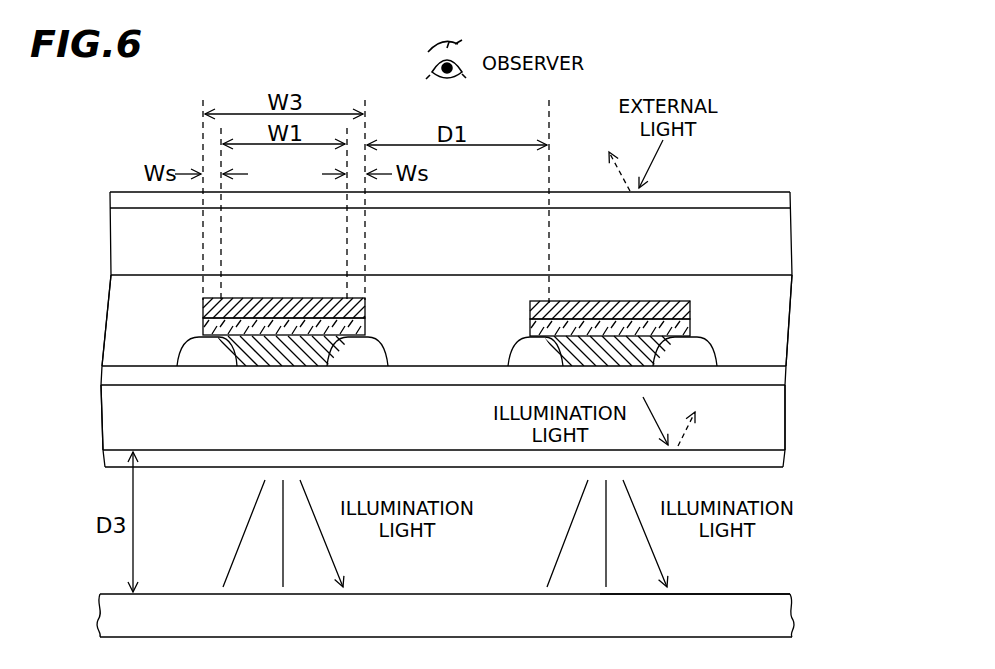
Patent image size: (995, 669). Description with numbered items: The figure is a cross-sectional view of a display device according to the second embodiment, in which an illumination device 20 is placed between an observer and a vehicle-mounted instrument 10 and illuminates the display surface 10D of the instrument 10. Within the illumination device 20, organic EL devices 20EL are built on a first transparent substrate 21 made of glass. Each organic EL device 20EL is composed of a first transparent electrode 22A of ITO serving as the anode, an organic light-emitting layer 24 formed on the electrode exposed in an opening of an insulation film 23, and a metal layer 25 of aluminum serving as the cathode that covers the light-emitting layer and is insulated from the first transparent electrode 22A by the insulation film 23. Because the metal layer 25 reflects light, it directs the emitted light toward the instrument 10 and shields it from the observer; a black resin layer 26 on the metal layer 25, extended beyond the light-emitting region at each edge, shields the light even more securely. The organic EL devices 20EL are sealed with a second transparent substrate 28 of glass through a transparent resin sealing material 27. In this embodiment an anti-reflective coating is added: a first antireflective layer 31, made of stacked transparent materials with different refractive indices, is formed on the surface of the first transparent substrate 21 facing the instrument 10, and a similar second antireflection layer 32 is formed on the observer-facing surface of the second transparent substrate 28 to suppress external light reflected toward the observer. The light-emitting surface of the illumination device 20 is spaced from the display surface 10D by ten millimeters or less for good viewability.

The illumination device 20 is at (753, 167).
The second antireflection layer 32 is at (790, 200).
The second transparent substrate 28 is at (784, 245).
The sealing material 27 is at (785, 332).
The first transparent electrode 22A is at (785, 377).
The first transparent substrate 21 is at (784, 420).
The first antireflective layer 31 is at (784, 461).
The organic EL device 20EL is at (456, 356).
The insulation film 23 is at (203, 357).
The organic light-emitting layer 24 is at (283, 360).
The metal layer 25 is at (357, 328).
The resin layer 26 is at (357, 312).
The vehicle-mounted instrument 10 is at (791, 620).
The display surface 10D is at (780, 595).